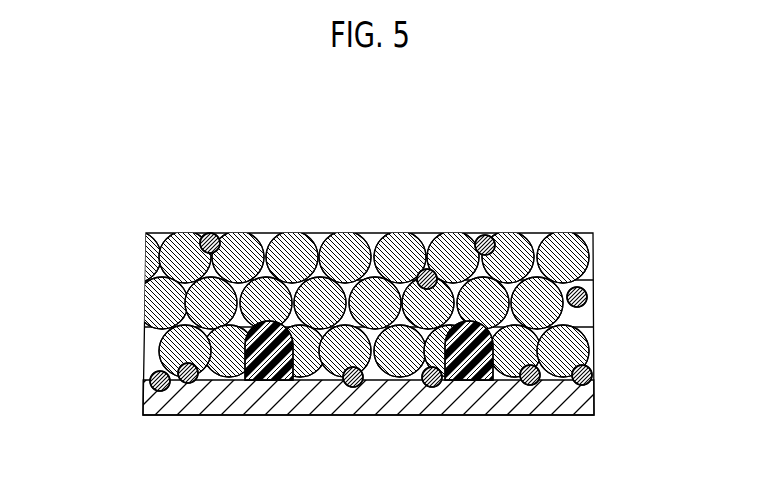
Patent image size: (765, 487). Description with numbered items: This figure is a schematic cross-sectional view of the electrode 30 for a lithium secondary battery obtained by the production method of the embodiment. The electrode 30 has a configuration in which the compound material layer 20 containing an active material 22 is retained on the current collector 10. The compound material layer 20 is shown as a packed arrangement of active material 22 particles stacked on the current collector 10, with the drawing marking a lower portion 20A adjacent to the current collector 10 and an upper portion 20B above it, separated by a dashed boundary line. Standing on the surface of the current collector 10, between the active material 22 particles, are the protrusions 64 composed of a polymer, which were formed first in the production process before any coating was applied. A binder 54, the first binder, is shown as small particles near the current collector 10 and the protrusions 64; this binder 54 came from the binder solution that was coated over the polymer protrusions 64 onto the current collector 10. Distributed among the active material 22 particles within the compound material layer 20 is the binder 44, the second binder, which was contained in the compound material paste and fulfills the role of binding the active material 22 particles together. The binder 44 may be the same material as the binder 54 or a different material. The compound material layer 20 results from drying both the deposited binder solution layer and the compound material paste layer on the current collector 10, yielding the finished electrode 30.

The current collector 10 is at (565, 406).
The compound material layer 20 is at (382, 279).
The first (lower) active material layer region 20A is at (586, 306).
The second (upper) active material layer region 20B is at (610, 233).
The active material 22 is at (165, 353).
The electrode 30 is at (135, 214).
The binder (second binder) 44 is at (207, 235).
The binder (first binder) 54 is at (362, 379).
The protrusions 64 is at (278, 373).